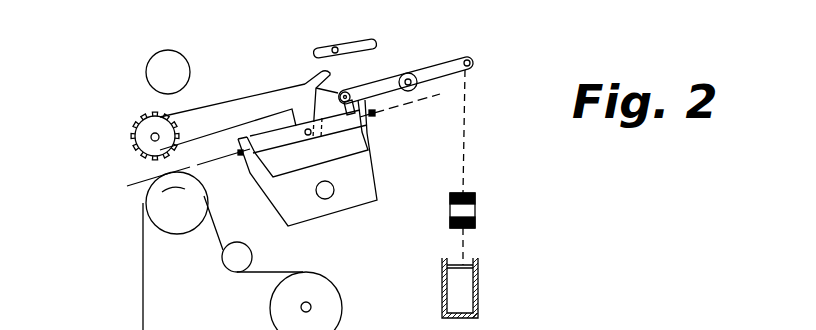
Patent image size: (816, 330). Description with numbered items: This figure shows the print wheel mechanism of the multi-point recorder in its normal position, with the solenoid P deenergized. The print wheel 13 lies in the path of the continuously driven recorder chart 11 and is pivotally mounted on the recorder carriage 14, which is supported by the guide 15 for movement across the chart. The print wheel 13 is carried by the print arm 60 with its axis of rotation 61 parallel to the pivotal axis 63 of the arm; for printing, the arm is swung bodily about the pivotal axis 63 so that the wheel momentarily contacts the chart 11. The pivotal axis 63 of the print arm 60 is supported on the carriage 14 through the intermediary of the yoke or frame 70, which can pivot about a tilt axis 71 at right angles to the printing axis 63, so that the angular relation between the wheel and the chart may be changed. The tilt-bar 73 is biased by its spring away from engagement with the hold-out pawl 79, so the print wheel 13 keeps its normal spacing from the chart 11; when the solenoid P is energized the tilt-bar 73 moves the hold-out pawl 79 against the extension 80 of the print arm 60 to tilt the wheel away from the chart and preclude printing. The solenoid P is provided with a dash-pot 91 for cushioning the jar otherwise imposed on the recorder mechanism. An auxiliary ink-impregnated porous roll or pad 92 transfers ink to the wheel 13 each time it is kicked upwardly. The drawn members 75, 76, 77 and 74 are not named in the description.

The auxiliary ink-impregnated porous roll or pad 92 is at (180, 62).
The print wheel 13 is at (133, 128).
The axis of rotation of the print wheel 61 is at (150, 138).
The print arm 60 is at (235, 108).
The extension of the print arm 80 is at (315, 80).
The hold-out pawl 79 is at (353, 42).
The lever 75 is at (380, 77).
The tilt-bar 73 is at (338, 92).
The pin 76 is at (412, 73).
The lever end 77 is at (447, 70).
The link 74 is at (348, 112).
The tilt axis 71 is at (376, 113).
The yoke or frame 70 is at (288, 142).
The pivotal axis of the print arm 63 is at (310, 135).
The recorder carriage 14 is at (370, 172).
The guide 15 is at (328, 198).
The recorder chart 11 is at (143, 267).
The solenoid P is at (450, 208).
The dash-pot 91 is at (442, 282).